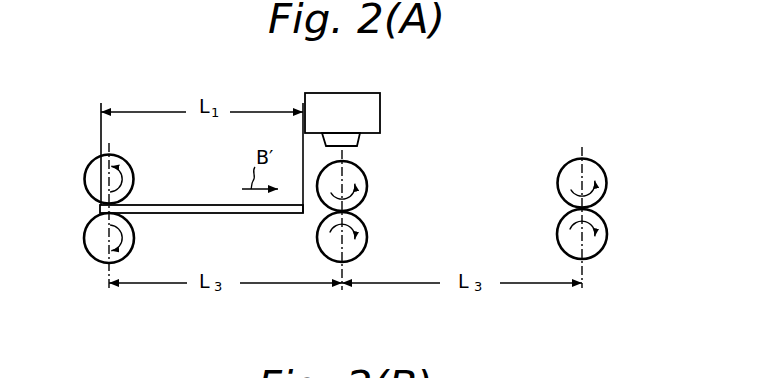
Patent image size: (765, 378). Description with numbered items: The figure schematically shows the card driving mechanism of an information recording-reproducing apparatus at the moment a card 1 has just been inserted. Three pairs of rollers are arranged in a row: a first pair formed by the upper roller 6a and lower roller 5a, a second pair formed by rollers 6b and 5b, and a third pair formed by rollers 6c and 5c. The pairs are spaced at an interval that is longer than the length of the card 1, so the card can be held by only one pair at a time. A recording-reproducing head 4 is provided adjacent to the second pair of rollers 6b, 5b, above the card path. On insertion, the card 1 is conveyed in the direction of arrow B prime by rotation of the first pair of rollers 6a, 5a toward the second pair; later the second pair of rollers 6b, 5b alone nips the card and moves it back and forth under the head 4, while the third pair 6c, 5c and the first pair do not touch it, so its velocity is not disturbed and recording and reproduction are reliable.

The card 1 is at (165, 206).
The recording-reproducing head 4 is at (380, 113).
The roller of pair a 5a is at (86, 248).
The roller of pair a 6a is at (84, 177).
The roller of pair b 5b is at (319, 248).
The roller of pair b 6b is at (366, 178).
The roller of pair c 5c is at (602, 245).
The roller of pair c 6c is at (601, 175).